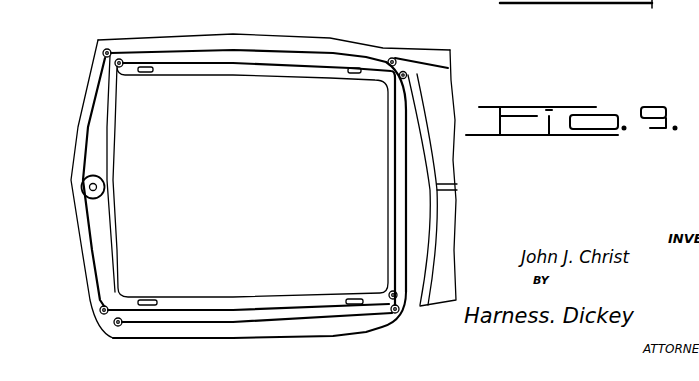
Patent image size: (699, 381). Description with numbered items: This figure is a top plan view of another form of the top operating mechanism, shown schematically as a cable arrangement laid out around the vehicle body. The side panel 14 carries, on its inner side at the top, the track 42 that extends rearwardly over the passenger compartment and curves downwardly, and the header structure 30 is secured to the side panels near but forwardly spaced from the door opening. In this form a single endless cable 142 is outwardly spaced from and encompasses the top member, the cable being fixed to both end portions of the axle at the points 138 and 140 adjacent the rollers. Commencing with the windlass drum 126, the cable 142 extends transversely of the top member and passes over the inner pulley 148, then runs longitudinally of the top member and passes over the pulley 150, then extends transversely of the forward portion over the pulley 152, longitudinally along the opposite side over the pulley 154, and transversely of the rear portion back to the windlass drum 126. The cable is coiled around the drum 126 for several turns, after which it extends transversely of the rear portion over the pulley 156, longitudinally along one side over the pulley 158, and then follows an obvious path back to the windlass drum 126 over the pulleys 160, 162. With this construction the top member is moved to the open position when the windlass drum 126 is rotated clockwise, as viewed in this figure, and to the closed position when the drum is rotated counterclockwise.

The side panel 14 is at (254, 33).
The header structure 30 is at (435, 163).
The track 42 is at (304, 338).
The windlass drum 126 is at (101, 184).
The point 138 is at (358, 308).
The point 140 is at (353, 67).
The endless cable 142 is at (211, 17).
The inner pulley 148 is at (100, 312).
The pulley 150 is at (390, 292).
The pulley 152 is at (396, 57).
The pulley 154 is at (125, 17).
The pulley 156 is at (122, 70).
The pulley 158 is at (401, 77).
The pulley 160 is at (408, 321).
The pulley 162 is at (115, 335).